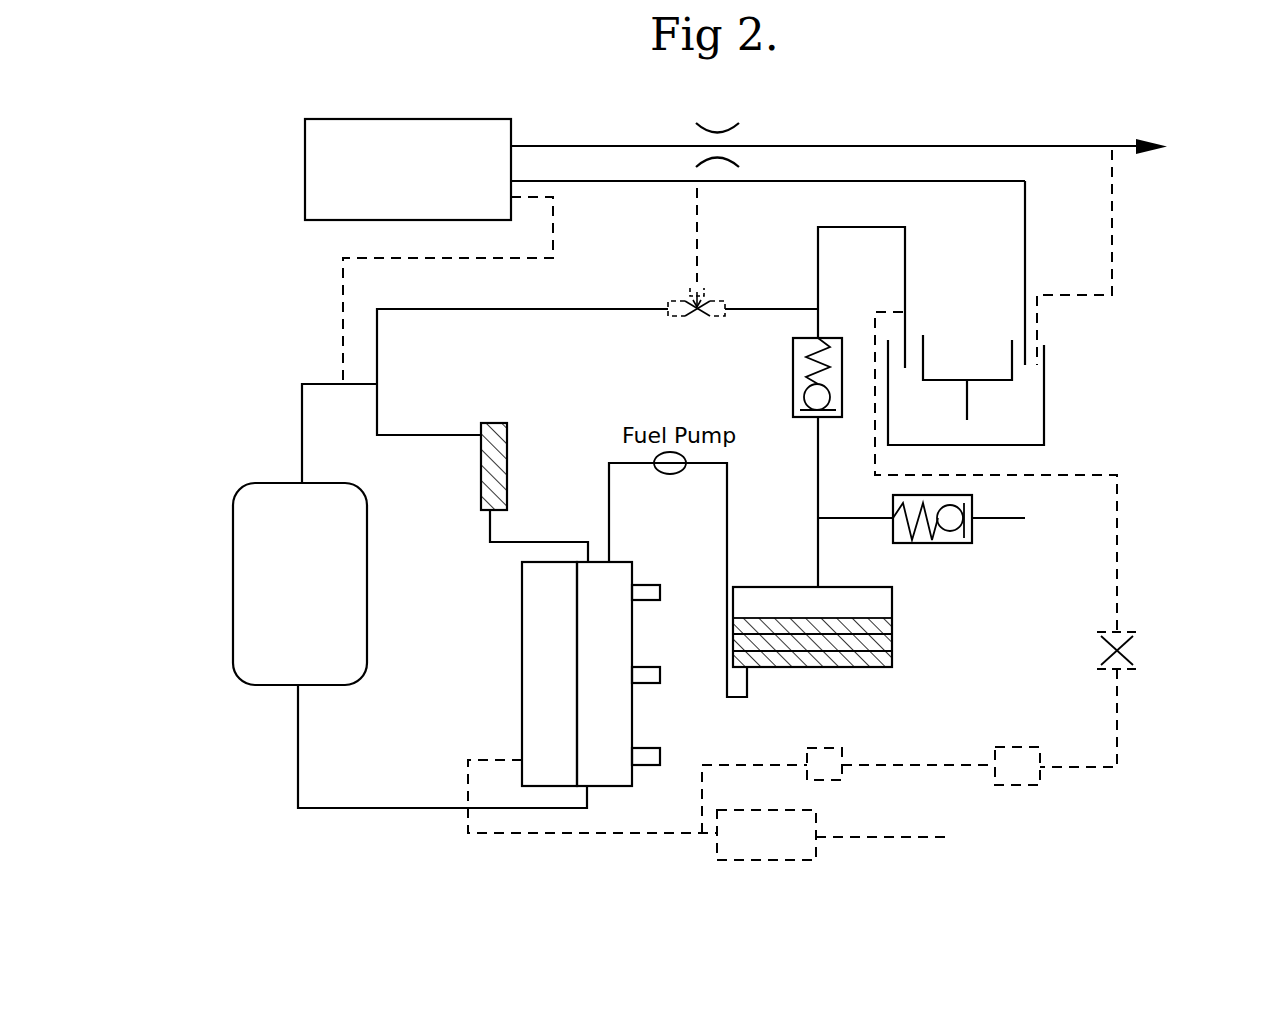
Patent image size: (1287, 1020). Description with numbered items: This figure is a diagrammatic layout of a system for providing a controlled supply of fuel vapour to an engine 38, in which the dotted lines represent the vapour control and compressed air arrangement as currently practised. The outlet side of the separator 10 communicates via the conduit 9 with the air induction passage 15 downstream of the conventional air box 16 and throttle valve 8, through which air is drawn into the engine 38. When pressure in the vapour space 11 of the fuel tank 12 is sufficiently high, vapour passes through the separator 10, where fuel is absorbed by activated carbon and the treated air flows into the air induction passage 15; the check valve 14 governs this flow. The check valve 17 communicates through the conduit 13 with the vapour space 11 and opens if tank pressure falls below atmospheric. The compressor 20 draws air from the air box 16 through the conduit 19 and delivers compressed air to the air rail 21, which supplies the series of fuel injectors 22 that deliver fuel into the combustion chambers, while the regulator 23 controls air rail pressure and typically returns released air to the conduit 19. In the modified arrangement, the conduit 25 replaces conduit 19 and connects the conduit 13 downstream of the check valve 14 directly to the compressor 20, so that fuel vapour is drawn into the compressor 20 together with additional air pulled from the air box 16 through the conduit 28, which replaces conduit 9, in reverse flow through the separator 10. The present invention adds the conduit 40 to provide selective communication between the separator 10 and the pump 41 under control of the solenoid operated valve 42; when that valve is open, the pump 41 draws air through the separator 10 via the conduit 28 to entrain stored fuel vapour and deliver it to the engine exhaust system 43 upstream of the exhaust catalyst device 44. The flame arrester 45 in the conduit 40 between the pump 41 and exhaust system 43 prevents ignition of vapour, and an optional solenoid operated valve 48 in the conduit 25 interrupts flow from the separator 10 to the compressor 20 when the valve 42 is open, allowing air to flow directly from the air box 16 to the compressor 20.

The throttle valve 8 is at (722, 126).
The conduit 9 is at (1113, 290).
The separator 10 is at (1045, 420).
The vapour space 11 is at (780, 586).
The fuel tank 12 is at (893, 650).
The conduit 13 is at (810, 272).
The check valve 14 is at (790, 388).
The air induction passage 15 is at (900, 144).
The air box 16 is at (415, 119).
The check valve 17 is at (973, 543).
The conduit 19 is at (556, 242).
The compressor 20 is at (510, 460).
The air rail 21 is at (620, 562).
The fuel injectors 22 is at (660, 758).
The regulator 23 is at (277, 481).
The conduit 25 is at (415, 312).
The conduit 28 is at (1027, 254).
The engine 38 is at (520, 683).
The conduit 40 is at (1120, 596).
The pump 41 is at (1015, 785).
The solenoid operated valve 42 is at (1118, 651).
The engine exhaust system 43 is at (673, 837).
The exhaust catalyst device 44 is at (816, 860).
The flame arrester 45 is at (840, 749).
The solenoid operated valve 48 is at (690, 303).